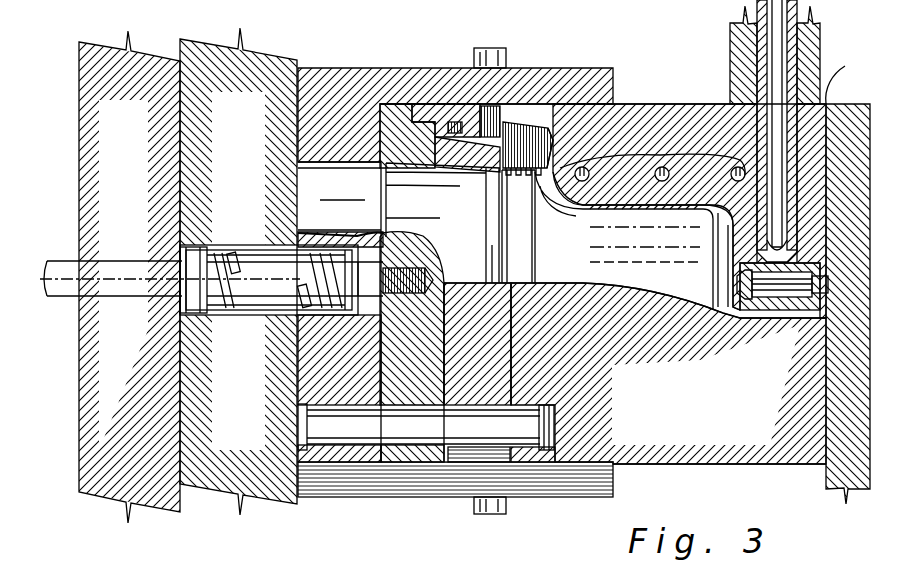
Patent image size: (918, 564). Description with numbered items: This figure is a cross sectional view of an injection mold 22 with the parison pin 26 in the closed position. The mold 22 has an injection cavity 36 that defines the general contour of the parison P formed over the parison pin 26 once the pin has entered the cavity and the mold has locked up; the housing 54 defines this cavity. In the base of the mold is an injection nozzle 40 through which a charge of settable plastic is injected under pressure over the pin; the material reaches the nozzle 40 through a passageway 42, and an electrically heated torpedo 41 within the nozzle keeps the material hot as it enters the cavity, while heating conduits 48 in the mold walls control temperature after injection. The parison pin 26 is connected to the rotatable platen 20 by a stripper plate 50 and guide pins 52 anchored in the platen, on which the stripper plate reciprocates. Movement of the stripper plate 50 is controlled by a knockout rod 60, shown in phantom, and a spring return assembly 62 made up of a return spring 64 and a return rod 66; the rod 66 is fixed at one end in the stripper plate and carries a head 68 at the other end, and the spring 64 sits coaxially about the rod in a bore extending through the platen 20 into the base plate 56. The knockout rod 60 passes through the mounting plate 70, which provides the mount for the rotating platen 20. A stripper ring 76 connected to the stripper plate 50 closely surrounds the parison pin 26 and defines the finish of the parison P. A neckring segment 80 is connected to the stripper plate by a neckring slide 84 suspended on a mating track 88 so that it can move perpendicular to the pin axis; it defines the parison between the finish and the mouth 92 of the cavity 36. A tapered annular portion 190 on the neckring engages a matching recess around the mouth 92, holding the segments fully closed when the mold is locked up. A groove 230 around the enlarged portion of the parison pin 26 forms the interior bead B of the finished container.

The rotatable platen 20 is at (263, 67).
The injection mold 22 is at (655, 86).
The parison pin 26 is at (663, 287).
The injection cavity 36 is at (655, 217).
The injection nozzle 40 is at (741, 300).
The electrically heated torpedo 41 is at (787, 295).
The passageway 42 is at (794, 62).
The heating conduits 48 is at (663, 168).
The stripper plate 50 is at (398, 125).
The guide pins 52 is at (326, 417).
The housing 54 is at (762, 452).
The base plate 56 is at (339, 452).
The knockout rod 60 is at (110, 263).
The spring return assembly 62 is at (268, 223).
The return spring 64 is at (300, 306).
The return rod 66 is at (247, 292).
The head 68 is at (193, 257).
The mounting plate 70 is at (100, 108).
The stripper ring 76 is at (444, 158).
The neckring segment 80 is at (547, 130).
The neckring slide 84 is at (489, 110).
The mating track 88 is at (453, 115).
The mouth 92 is at (518, 226).
The tapered annular portion 190 is at (555, 143).
The groove 230 is at (498, 241).
The interior bead B is at (499, 188).
The parison P is at (613, 217).